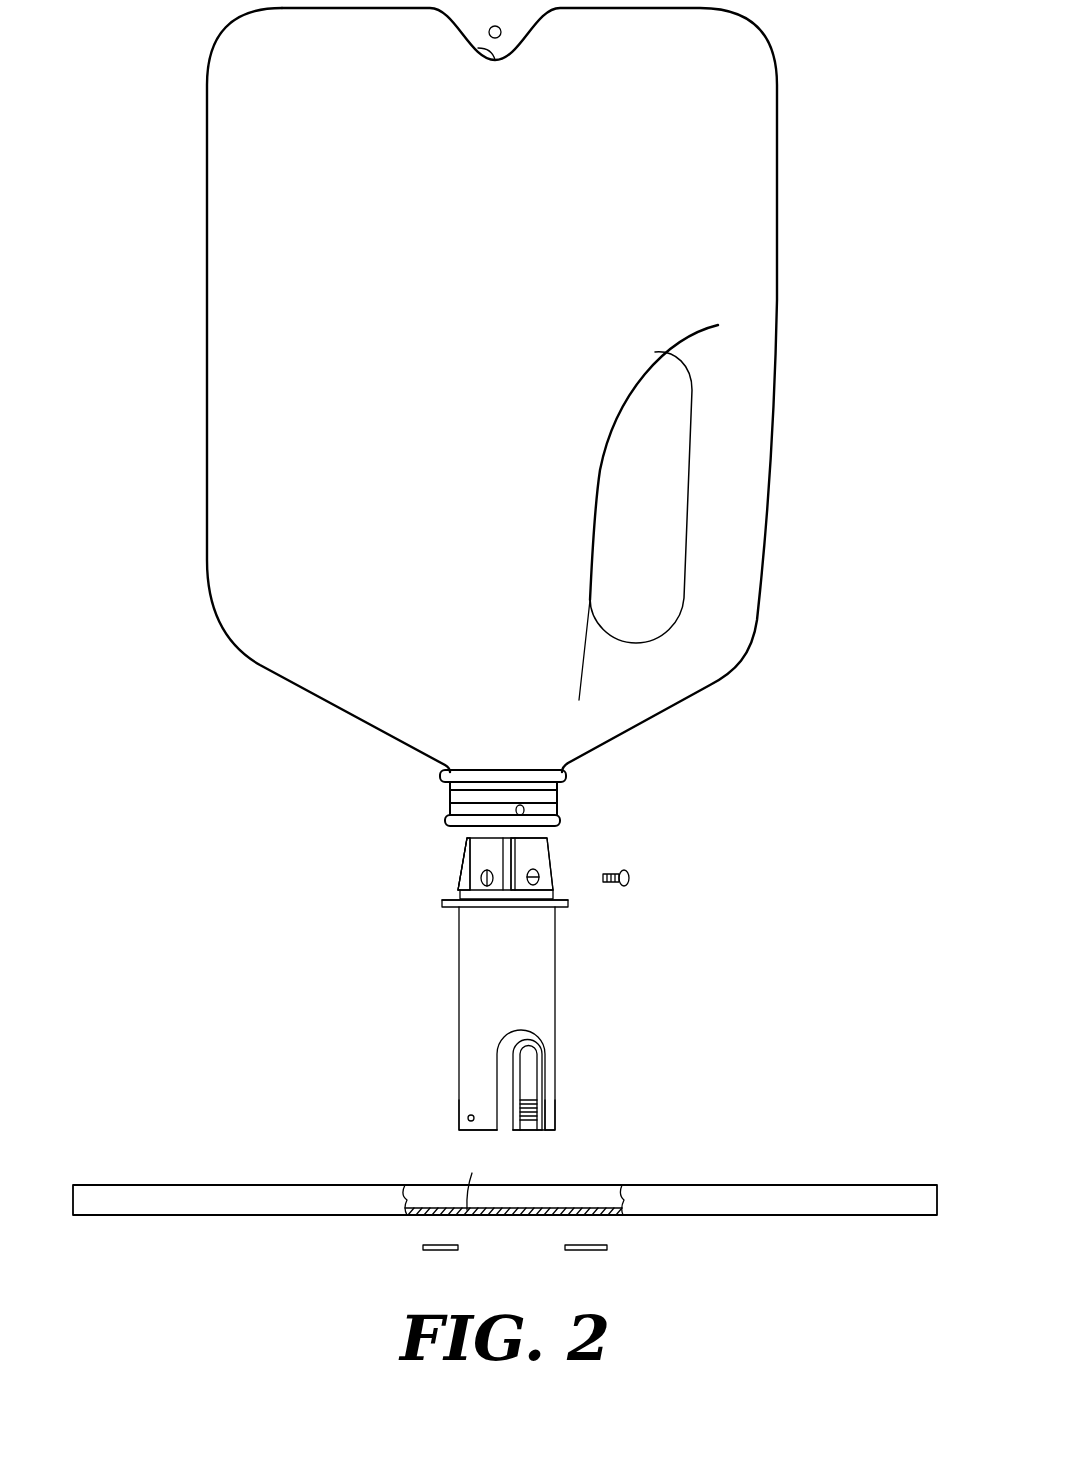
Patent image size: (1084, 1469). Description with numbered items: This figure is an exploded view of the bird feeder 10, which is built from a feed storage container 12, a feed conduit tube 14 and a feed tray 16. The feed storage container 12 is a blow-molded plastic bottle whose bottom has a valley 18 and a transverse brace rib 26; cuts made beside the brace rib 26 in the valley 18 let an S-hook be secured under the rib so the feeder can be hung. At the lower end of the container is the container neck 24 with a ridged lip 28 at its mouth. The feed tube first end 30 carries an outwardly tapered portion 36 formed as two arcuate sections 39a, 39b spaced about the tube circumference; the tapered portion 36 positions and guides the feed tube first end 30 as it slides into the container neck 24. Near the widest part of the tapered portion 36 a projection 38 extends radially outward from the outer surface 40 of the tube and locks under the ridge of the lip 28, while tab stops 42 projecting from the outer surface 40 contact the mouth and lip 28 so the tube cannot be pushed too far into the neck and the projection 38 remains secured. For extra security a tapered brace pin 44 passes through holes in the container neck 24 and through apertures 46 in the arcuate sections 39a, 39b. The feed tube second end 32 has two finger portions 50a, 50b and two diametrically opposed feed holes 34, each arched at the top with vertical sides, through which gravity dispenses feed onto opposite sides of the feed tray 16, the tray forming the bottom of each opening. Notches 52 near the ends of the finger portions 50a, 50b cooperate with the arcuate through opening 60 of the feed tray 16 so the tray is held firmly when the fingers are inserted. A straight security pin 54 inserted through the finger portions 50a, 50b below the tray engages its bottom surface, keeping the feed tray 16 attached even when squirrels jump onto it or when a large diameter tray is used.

The bird feeder 10 is at (872, 245).
The feed storage container 12 is at (752, 341).
The feed conduit tube 14 is at (510, 1042).
The feed tray 16 is at (505, 1179).
The valley 18 is at (478, 52).
The container neck 24 is at (578, 775).
The brace rib 26 is at (512, 35).
The lip 28 is at (562, 832).
The feed tube first end 30 is at (550, 860).
The feed tube second end 32 is at (560, 1114).
The feed hole 34 is at (505, 1065).
The tapered portion 36 is at (462, 870).
The projection 38 is at (448, 895).
The arcuate section 39a is at (465, 852).
The arcuate section 39b is at (547, 855).
The outer surface 40 is at (520, 970).
The tab stop 42 is at (562, 908).
The brace pin 44 is at (629, 878).
The aperture 46 is at (540, 882).
The finger portion 50a is at (468, 1130).
The finger portion 50b is at (547, 1130).
The notch 52 is at (520, 1130).
The security pin 54 is at (437, 1250).
The arcuate through opening 60 is at (553, 1212).